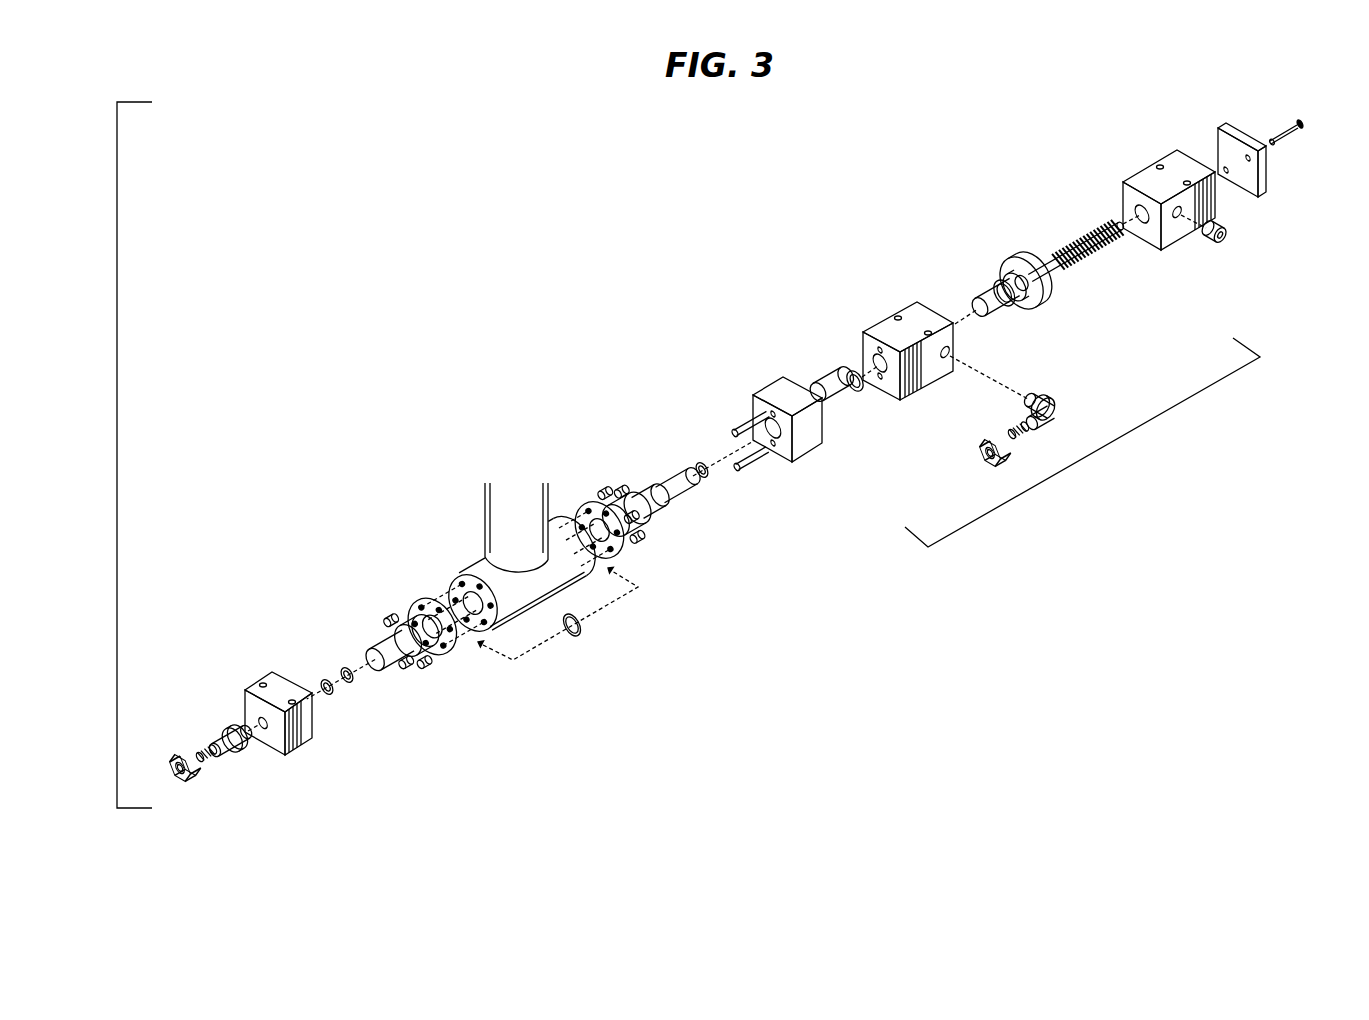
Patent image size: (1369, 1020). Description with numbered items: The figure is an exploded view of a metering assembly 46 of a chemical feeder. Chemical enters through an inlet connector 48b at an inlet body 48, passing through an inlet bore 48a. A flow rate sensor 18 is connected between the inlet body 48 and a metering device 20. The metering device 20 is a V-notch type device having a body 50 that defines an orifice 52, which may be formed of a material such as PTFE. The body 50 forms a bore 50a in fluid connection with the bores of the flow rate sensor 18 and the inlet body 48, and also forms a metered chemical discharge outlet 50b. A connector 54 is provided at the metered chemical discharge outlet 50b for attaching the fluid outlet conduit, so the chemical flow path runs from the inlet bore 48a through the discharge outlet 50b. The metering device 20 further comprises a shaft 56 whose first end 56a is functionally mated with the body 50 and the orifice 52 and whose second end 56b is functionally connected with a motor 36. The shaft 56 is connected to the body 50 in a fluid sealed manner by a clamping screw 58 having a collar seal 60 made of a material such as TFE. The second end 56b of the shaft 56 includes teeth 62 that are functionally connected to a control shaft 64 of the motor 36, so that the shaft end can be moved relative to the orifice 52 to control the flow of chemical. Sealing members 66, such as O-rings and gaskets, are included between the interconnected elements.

The flow rate sensor 18 is at (495, 528).
The metering device 20 is at (1100, 452).
The motor 36 is at (1147, 175).
The metering assembly 46 is at (600, 310).
The inlet body 48 is at (253, 737).
The inlet bore 48a is at (262, 718).
The inlet connector 48b is at (202, 793).
The body 50 is at (866, 350).
The bore 50a is at (870, 360).
The metered chemical discharge outlet 50b is at (943, 358).
The orifice 52 is at (850, 372).
The connector 54 is at (1057, 404).
The shaft 56 is at (1042, 265).
The first end 56a is at (990, 294).
The second end 56b is at (1097, 257).
The clamping screw 58 is at (1050, 300).
The collar seal 60 is at (1032, 299).
The teeth 62 is at (1102, 226).
The control shaft 64 is at (1228, 240).
The sealing members 66 is at (345, 668).